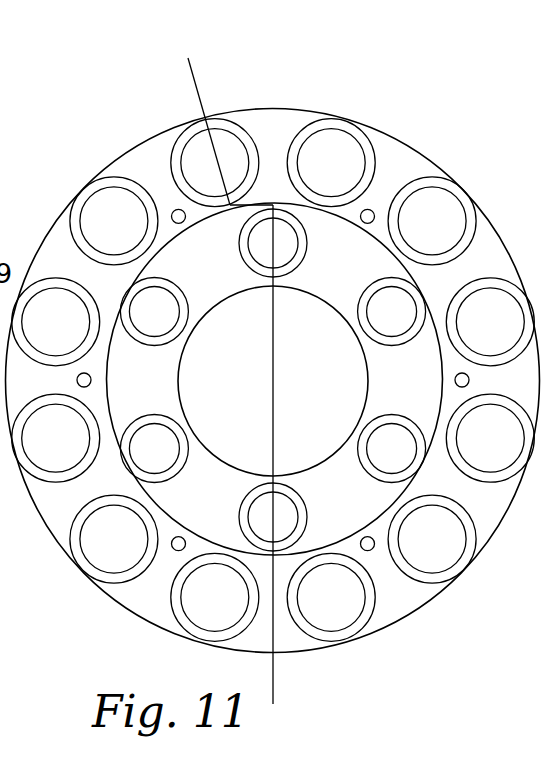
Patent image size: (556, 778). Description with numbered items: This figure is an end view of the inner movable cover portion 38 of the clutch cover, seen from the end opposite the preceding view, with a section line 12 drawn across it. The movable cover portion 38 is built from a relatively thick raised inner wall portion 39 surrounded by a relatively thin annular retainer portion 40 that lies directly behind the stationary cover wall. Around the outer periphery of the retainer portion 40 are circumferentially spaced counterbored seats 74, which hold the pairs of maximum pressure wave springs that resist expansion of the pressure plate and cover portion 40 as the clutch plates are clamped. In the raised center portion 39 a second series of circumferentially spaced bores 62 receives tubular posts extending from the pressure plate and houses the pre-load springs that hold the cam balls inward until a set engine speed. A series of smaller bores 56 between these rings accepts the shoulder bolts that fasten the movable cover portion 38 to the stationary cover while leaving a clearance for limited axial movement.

The section line 12- 12 is at (188, 58).
The inner movable cover portion 38 is at (424, 630).
The inner wall portion 39 is at (335, 275).
The annular retainer portion 40 is at (480, 255).
The bores 56 is at (369, 211).
The bores 62 is at (157, 290).
The counterbored seats 74 is at (334, 145).